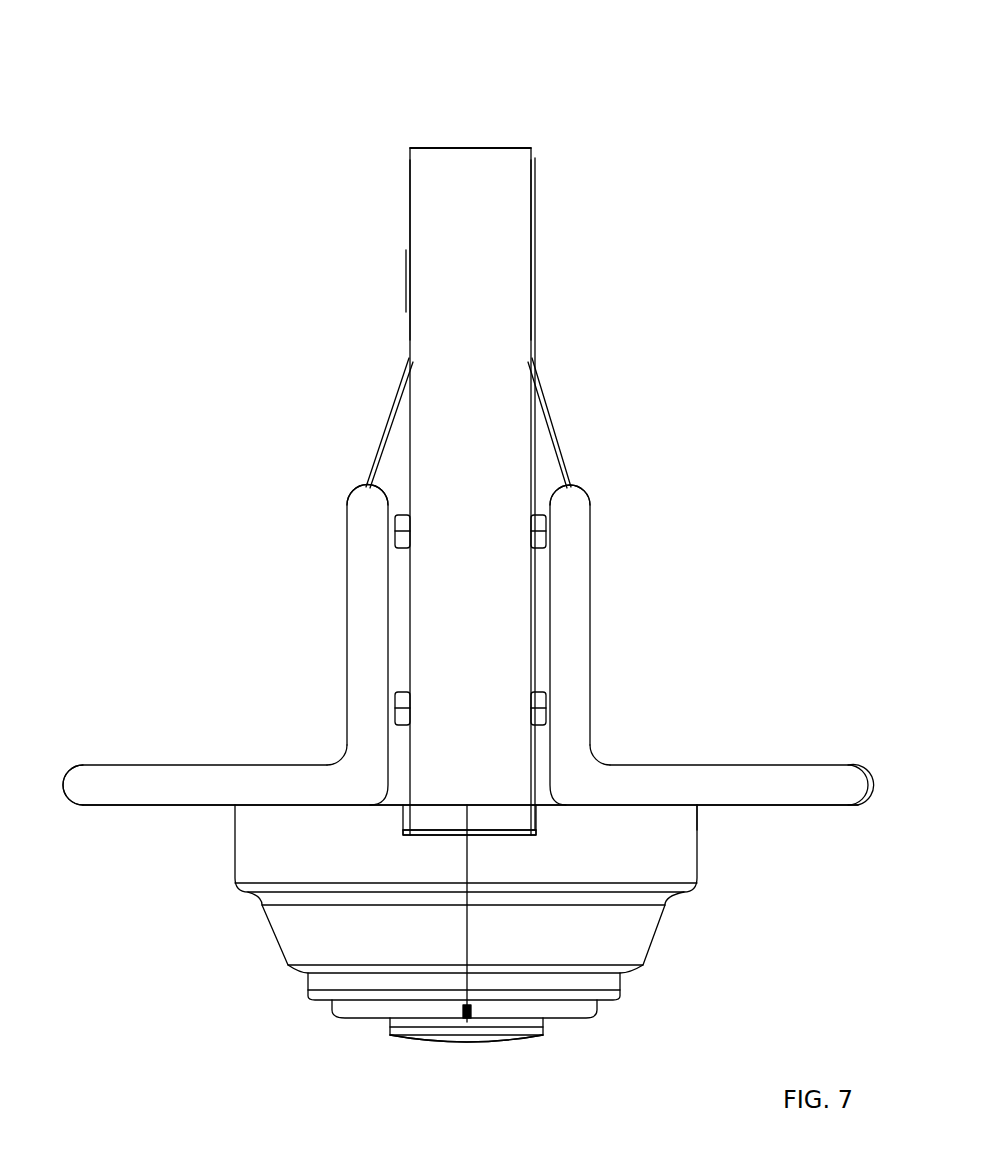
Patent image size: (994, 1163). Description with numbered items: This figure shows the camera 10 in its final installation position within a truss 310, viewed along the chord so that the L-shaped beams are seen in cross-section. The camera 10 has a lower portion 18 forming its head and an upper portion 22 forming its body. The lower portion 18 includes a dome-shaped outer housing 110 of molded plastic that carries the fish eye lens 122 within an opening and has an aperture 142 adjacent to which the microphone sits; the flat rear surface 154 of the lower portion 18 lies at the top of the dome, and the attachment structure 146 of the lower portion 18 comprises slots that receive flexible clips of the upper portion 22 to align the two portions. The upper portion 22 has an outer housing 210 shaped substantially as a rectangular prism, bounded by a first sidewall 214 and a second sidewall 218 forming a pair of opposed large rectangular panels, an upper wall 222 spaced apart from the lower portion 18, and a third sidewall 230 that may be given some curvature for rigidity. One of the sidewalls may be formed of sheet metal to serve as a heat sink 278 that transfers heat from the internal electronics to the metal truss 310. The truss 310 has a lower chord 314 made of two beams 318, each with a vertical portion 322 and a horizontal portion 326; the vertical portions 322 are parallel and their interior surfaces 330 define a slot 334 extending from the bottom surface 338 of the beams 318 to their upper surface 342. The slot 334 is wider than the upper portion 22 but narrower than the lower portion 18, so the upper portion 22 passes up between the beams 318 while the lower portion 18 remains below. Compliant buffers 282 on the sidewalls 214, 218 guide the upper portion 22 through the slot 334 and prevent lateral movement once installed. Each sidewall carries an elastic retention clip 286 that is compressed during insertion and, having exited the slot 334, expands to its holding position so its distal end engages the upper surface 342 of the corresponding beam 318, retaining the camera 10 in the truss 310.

The camera 10 is at (572, 62).
The lower portion 18 is at (262, 1010).
The upper portion 22 is at (574, 318).
The outer housing 110 is at (690, 868).
The lens 122 is at (483, 1043).
The aperture 142 is at (460, 1010).
The attachment structure 146 is at (520, 836).
The rear surface 154 is at (674, 803).
The outer housing 210 is at (431, 158).
The first sidewall 214 is at (408, 180).
The second sidewall 218 is at (540, 205).
The upper wall 222 is at (464, 146).
The third sidewall 230 is at (486, 252).
The heat sink 278 is at (541, 632).
The compliant buffers 282 is at (546, 533).
The retention clip 286 is at (384, 440).
The truss 310 is at (727, 566).
The lower chord 314 is at (722, 638).
The beams 318 is at (82, 793).
The vertical portion 322 is at (358, 626).
The horizontal portion 326 is at (150, 775).
The interior surfaces 330 is at (396, 740).
The slot 334 is at (390, 661).
The bottom surface 338 is at (178, 810).
The upper surface 342 is at (360, 485).